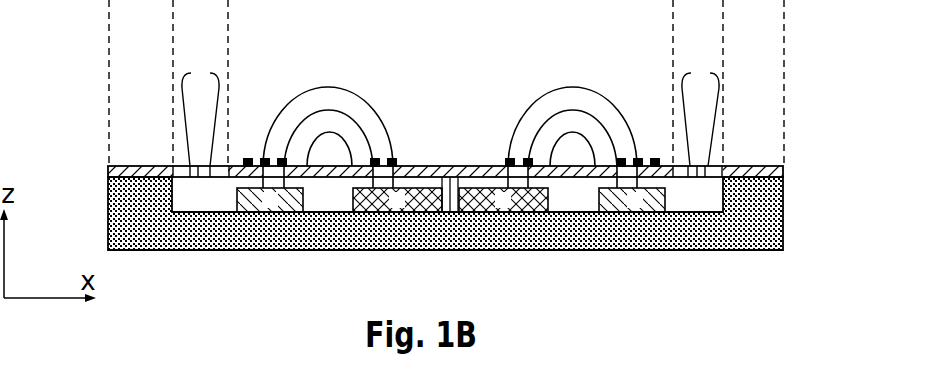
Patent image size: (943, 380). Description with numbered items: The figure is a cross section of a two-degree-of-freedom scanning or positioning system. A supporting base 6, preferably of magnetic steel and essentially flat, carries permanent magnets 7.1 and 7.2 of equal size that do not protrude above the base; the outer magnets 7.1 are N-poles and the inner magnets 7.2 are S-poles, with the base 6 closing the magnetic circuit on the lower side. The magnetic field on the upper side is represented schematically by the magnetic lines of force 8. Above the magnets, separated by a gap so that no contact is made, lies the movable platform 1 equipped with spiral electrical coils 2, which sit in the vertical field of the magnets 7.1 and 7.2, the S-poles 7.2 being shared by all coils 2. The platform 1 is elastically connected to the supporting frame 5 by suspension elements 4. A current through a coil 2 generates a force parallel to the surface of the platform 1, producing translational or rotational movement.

The movable platform 1 is at (457, 167).
The electrical coils 2 is at (393, 80).
The suspension elements 4 is at (447, 117).
The supporting frame 5 is at (783, 171).
The supporting base 6 is at (773, 216).
The outer permanent magnets 7.1 is at (293, 204).
The inner permanent magnets 7.2 is at (480, 204).
The magnetic lines of force 8 is at (278, 113).